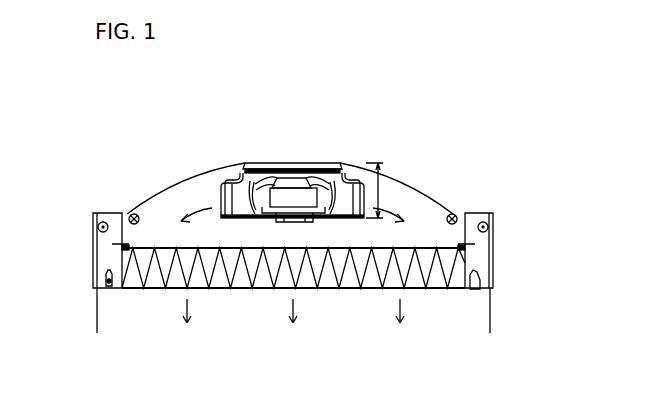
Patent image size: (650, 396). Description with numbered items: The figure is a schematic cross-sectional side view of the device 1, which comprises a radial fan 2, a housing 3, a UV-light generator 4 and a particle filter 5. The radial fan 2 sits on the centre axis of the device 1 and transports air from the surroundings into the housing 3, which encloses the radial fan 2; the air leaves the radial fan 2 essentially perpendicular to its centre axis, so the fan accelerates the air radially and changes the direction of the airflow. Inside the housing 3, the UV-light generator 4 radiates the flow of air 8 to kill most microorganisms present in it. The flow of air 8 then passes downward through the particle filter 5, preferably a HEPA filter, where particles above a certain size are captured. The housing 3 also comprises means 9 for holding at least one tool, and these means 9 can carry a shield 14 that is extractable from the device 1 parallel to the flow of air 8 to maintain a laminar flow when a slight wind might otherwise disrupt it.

The device 1 is at (177, 136).
The radial fan 2 is at (302, 170).
The housing 3 is at (366, 169).
The UV-light generator 4 is at (131, 213).
The particle filter 5 is at (443, 263).
The flow of air 8 is at (355, 308).
The means for holding at least one tool 9 is at (110, 256).
The shield 14 is at (96, 308).